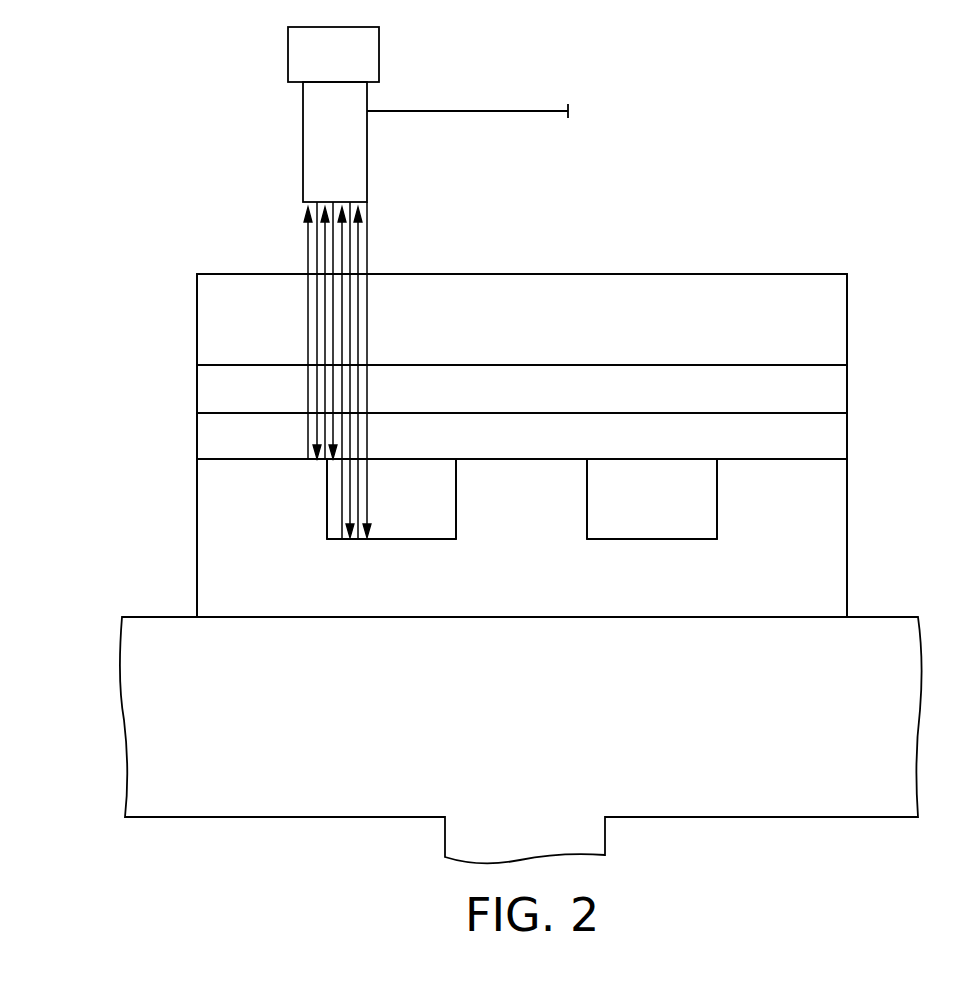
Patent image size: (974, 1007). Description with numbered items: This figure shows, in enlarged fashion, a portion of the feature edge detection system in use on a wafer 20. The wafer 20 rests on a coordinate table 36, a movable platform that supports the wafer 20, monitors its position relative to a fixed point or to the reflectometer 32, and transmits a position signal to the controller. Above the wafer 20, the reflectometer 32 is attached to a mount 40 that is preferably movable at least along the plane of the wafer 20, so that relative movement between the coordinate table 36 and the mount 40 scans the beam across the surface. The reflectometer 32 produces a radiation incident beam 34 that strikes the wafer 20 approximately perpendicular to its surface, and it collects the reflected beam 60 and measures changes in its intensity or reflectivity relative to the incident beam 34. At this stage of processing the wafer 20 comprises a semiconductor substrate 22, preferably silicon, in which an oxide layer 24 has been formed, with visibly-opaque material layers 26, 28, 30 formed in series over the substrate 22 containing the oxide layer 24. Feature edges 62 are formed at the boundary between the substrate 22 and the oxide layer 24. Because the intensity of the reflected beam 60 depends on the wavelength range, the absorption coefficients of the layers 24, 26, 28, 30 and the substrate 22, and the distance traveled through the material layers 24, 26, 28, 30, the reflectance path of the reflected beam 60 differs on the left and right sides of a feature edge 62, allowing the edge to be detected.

The wafer 20 is at (168, 617).
The semiconductor substrate 22 is at (832, 552).
The oxide layer 24 is at (412, 538).
The visibly-opaque material layer 26 is at (832, 442).
The visibly-opaque material layer 28 is at (832, 396).
The visibly-opaque material layer 30 is at (832, 322).
The reflectometer 32 is at (303, 133).
The incident beam 34 is at (367, 228).
The coordinate table 36 is at (902, 725).
The mount 40 is at (288, 60).
The reflected beam 60 is at (308, 240).
The feature edge 62 is at (327, 507).